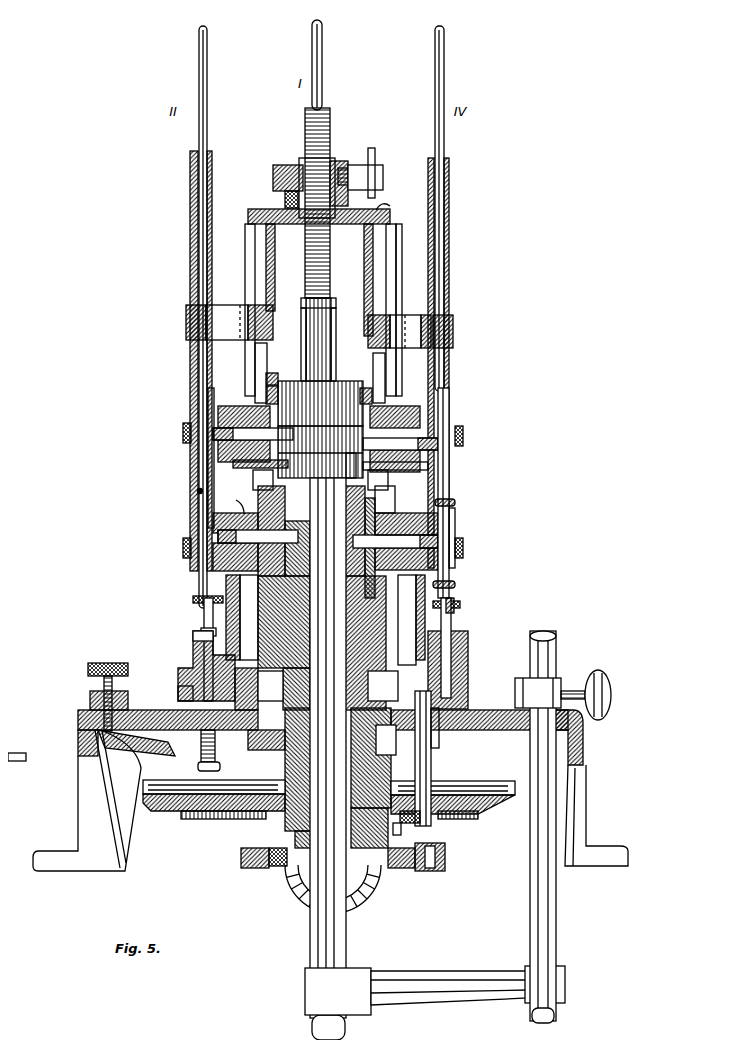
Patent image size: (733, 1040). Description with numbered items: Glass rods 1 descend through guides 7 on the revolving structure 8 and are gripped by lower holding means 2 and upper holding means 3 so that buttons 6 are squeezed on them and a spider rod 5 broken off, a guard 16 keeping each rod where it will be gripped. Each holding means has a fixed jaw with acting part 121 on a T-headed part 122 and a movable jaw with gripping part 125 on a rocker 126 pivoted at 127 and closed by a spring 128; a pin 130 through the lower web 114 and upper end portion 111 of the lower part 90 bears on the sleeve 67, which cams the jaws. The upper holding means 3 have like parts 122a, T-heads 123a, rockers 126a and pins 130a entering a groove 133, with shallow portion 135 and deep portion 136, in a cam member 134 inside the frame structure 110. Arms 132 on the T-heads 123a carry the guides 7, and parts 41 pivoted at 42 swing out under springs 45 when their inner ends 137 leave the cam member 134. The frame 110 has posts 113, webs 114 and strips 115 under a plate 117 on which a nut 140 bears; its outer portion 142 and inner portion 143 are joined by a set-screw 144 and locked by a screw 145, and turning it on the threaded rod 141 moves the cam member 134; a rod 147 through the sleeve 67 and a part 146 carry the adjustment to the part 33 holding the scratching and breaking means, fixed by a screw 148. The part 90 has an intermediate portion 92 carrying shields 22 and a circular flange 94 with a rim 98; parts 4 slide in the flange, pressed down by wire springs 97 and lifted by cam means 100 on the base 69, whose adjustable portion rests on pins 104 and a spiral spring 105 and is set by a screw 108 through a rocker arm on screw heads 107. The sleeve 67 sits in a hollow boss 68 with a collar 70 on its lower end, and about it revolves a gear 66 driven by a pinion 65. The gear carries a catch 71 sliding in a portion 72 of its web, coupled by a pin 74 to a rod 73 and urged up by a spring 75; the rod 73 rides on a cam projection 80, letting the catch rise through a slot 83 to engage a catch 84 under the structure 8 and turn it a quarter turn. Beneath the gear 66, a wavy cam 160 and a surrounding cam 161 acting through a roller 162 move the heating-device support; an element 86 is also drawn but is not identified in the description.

The rod 1 is at (190, 56).
The tube 7 is at (183, 166).
The plate 8 is at (240, 207).
The collar 140 is at (302, 179).
The threaded spindle 141 is at (323, 112).
The block 142 is at (265, 163).
The block 143 is at (333, 153).
The key 144 is at (277, 191).
The pin 145 is at (375, 168).
The lug 117 is at (382, 199).
The cylinder wall 115 is at (240, 255).
The sleeve 114 is at (270, 250).
The cylinder 110 is at (394, 254).
The ring 132 is at (222, 297).
The guide 113 is at (355, 300).
The spindle 134 is at (335, 372).
The sleeve 123a is at (250, 350).
The ring 126a is at (251, 377).
The ring 122a is at (235, 404).
The coupling 136 is at (291, 412).
The ring 130a is at (321, 439).
The pin 133 is at (325, 438).
The coupling 135 is at (320, 452).
The pin 137 is at (349, 465).
The section line 3 is at (324, 435).
The pin 41 is at (234, 460).
The bushing 42 is at (334, 478).
The sleeve 45 is at (311, 529).
The pin 16 is at (191, 482).
The bar 125 is at (200, 500).
The spring 127 is at (226, 497).
The ring 126 is at (228, 508).
The hub 111 is at (293, 537).
The ring 128 is at (403, 503).
The ring 122 is at (406, 524).
The bar 121 is at (447, 508).
The rod 5 is at (442, 462).
The collar 6 is at (447, 494).
The section line 2 is at (325, 549).
The ring 130 is at (325, 550).
The post 22 is at (218, 577).
The disc 4 is at (185, 592).
The hub 67 is at (350, 594).
The bracket 86 is at (185, 628).
The rod 97 is at (196, 624).
The bracket 94 is at (170, 655).
The rod 92 is at (446, 612).
The bracket 98 is at (170, 689).
The block 68 is at (259, 689).
The block 90 is at (363, 643).
The block 84 is at (383, 686).
The bracket 100 is at (460, 675).
The thumb screw 108 is at (80, 668).
The thumb screw 148 is at (603, 685).
The base 69 is at (70, 719).
The spring 105 is at (193, 729).
The block 80 is at (240, 733).
The block 73 is at (390, 736).
The pin 83 is at (431, 725).
The rod 71 is at (424, 735).
The rim 72 is at (437, 766).
The pin 107 is at (91, 753).
The cap 104 is at (190, 760).
The rim 70 is at (260, 772).
The rim 66 is at (187, 811).
The block 161 is at (233, 850).
The ring 160 is at (270, 858).
The bearing 65 is at (366, 880).
The pin 75 is at (391, 831).
The pin 74 is at (414, 816).
The nut 162 is at (440, 850).
The post 33 is at (549, 900).
The cross bar 146 is at (452, 963).
The spindle 147 is at (304, 928).